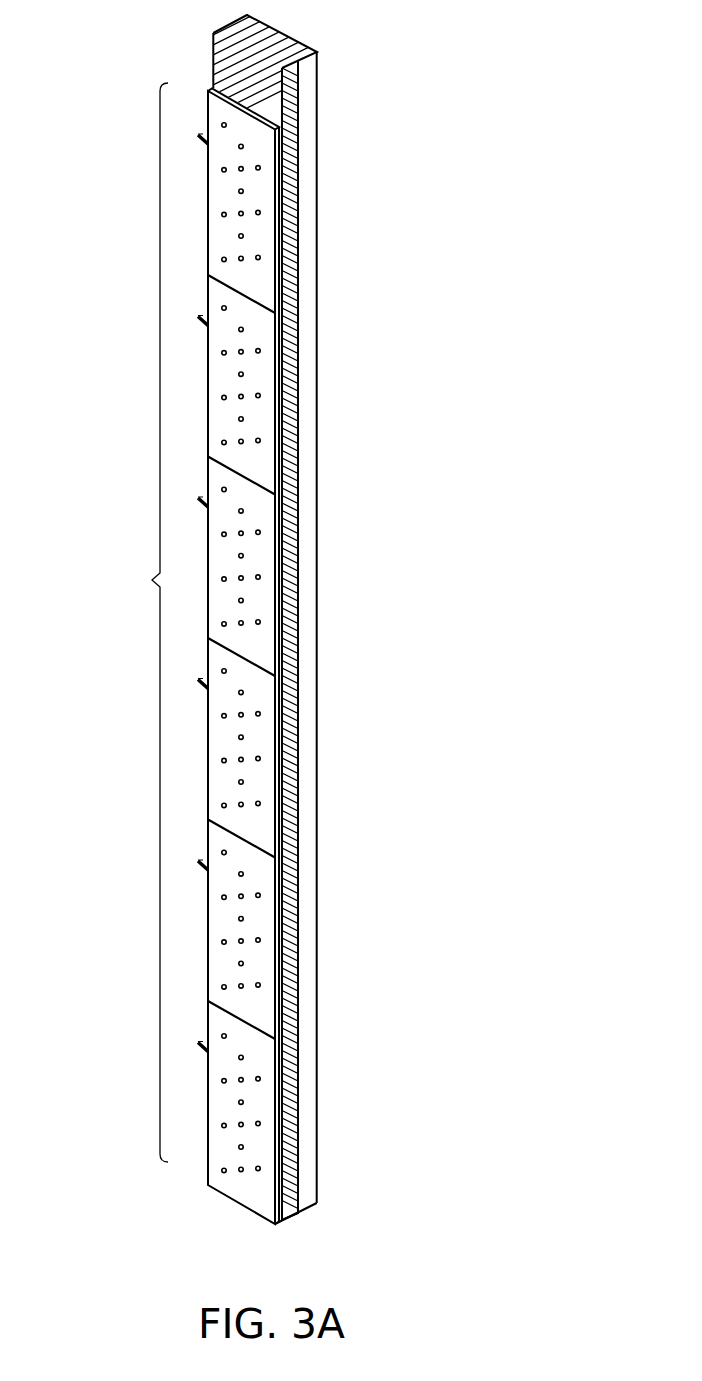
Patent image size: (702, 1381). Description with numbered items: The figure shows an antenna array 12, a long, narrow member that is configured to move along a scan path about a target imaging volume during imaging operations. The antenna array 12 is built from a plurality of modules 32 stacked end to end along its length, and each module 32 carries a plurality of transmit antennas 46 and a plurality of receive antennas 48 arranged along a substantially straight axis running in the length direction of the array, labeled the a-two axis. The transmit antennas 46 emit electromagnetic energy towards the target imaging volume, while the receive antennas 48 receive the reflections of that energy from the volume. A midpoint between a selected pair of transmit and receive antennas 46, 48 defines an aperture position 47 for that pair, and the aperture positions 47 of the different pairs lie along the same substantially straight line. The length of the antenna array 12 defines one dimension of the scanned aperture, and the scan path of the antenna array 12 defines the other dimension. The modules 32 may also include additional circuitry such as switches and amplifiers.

The antenna array 12 is at (118, 122).
The module 32 is at (277, 202).
The transmit antenna 46 is at (224, 125).
The aperture position 47 is at (241, 146).
The receive antenna 48 is at (258, 167).